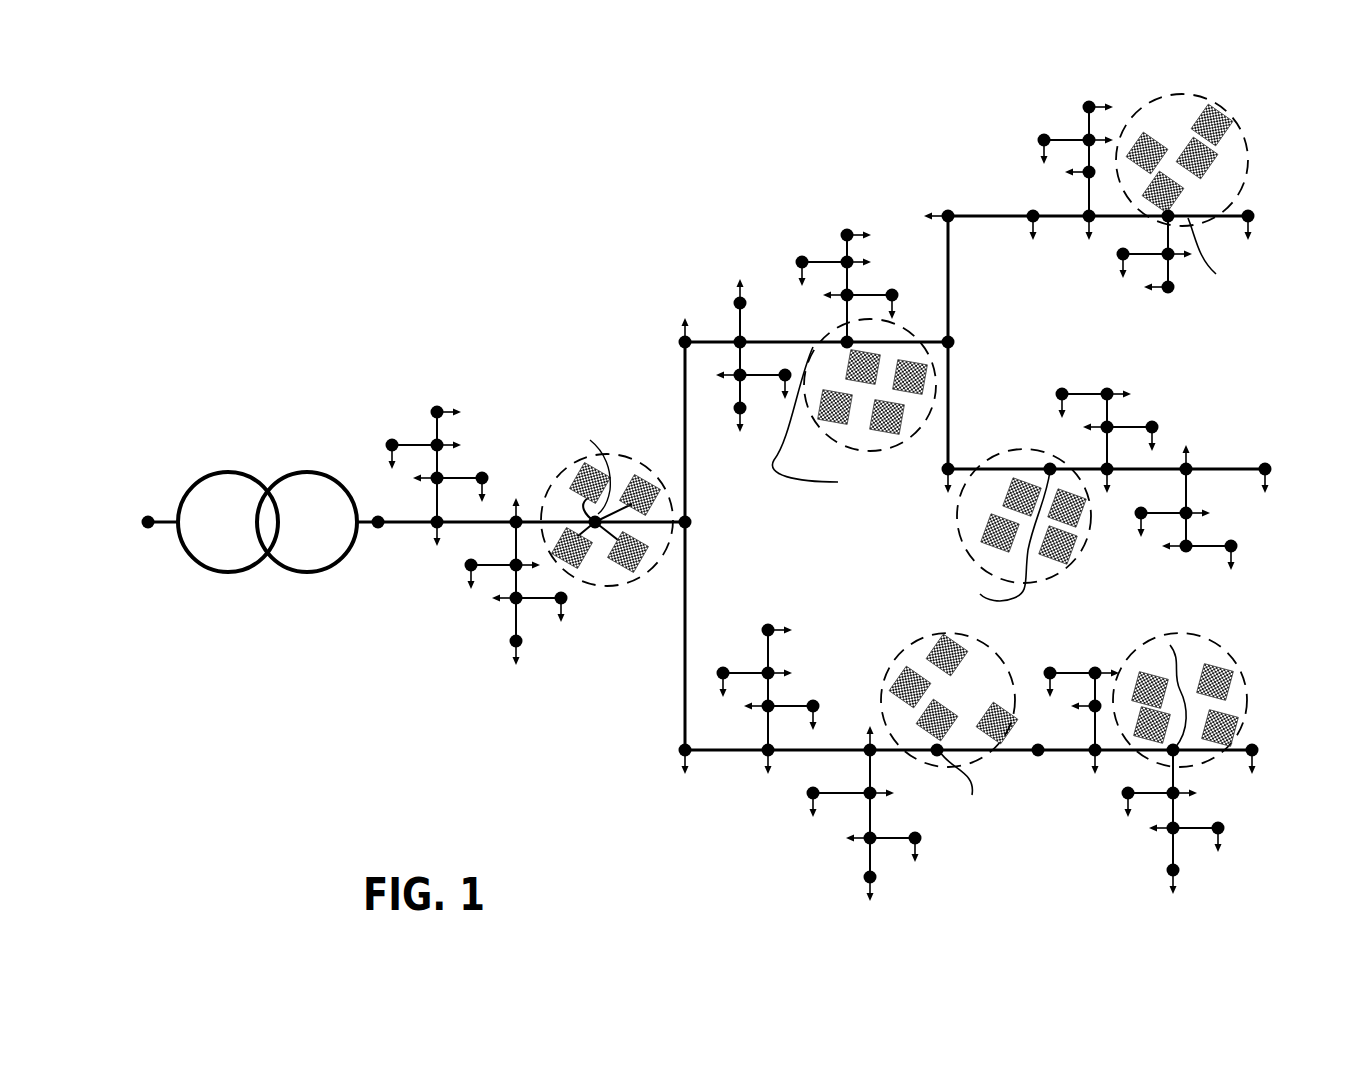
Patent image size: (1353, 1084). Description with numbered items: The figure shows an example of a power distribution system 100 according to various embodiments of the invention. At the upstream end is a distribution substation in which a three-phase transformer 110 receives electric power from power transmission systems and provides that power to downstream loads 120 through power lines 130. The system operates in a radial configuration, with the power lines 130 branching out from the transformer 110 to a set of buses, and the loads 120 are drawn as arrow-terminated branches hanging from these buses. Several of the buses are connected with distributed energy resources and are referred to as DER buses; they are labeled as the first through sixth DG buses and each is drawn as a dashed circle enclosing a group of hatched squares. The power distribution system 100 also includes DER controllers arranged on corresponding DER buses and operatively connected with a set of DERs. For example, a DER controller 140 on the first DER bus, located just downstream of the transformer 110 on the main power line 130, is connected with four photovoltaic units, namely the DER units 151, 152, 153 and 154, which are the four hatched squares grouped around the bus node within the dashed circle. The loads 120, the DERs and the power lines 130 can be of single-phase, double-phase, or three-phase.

The power distribution system 100 is at (534, 258).
The three-phase transformer 110 is at (226, 470).
The loads 120 is at (455, 406).
The power lines 130 is at (405, 530).
The DER controller 140 is at (598, 586).
The DER unit 151 is at (575, 476).
The DER unit 152 is at (560, 530).
The DER unit 153 is at (648, 482).
The DER unit 154 is at (637, 566).